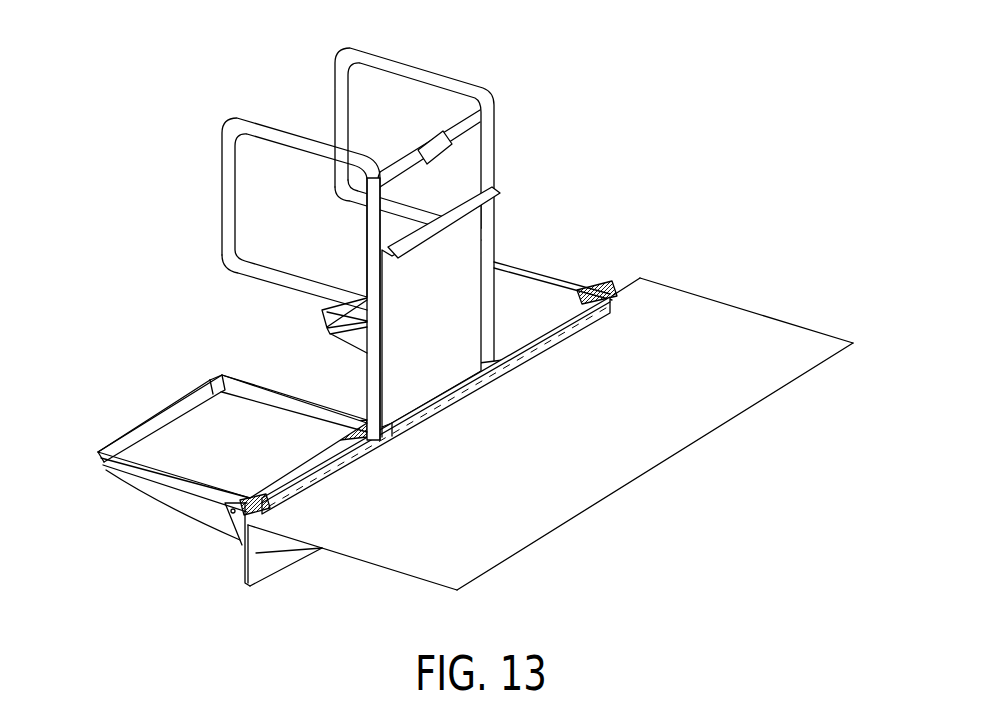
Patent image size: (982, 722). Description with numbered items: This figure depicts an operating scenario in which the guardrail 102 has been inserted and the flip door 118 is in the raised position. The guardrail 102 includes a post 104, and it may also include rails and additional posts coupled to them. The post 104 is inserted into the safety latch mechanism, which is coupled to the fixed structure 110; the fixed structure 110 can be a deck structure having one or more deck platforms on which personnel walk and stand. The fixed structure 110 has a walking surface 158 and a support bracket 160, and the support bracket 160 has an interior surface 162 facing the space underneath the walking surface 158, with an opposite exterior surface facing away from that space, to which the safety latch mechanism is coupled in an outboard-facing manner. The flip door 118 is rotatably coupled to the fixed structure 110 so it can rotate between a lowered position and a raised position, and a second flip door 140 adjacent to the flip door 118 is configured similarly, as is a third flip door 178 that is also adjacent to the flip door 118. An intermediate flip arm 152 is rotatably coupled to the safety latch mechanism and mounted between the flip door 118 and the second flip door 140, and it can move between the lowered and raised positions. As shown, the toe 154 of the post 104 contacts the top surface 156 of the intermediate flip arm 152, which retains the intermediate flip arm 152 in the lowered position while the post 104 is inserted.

The guardrail 102 is at (530, 108).
The post 104 is at (375, 380).
The fixed structure 110 is at (748, 308).
The flip door 118 is at (430, 337).
The second flip door 140 is at (188, 437).
The intermediate flip arm 152 is at (212, 372).
The toe 154 is at (348, 418).
The top surface 156 is at (277, 405).
The walking surface 158 is at (697, 430).
The support bracket 160 is at (265, 573).
The interior surface 162 is at (278, 558).
The third flip door 178 is at (510, 292).